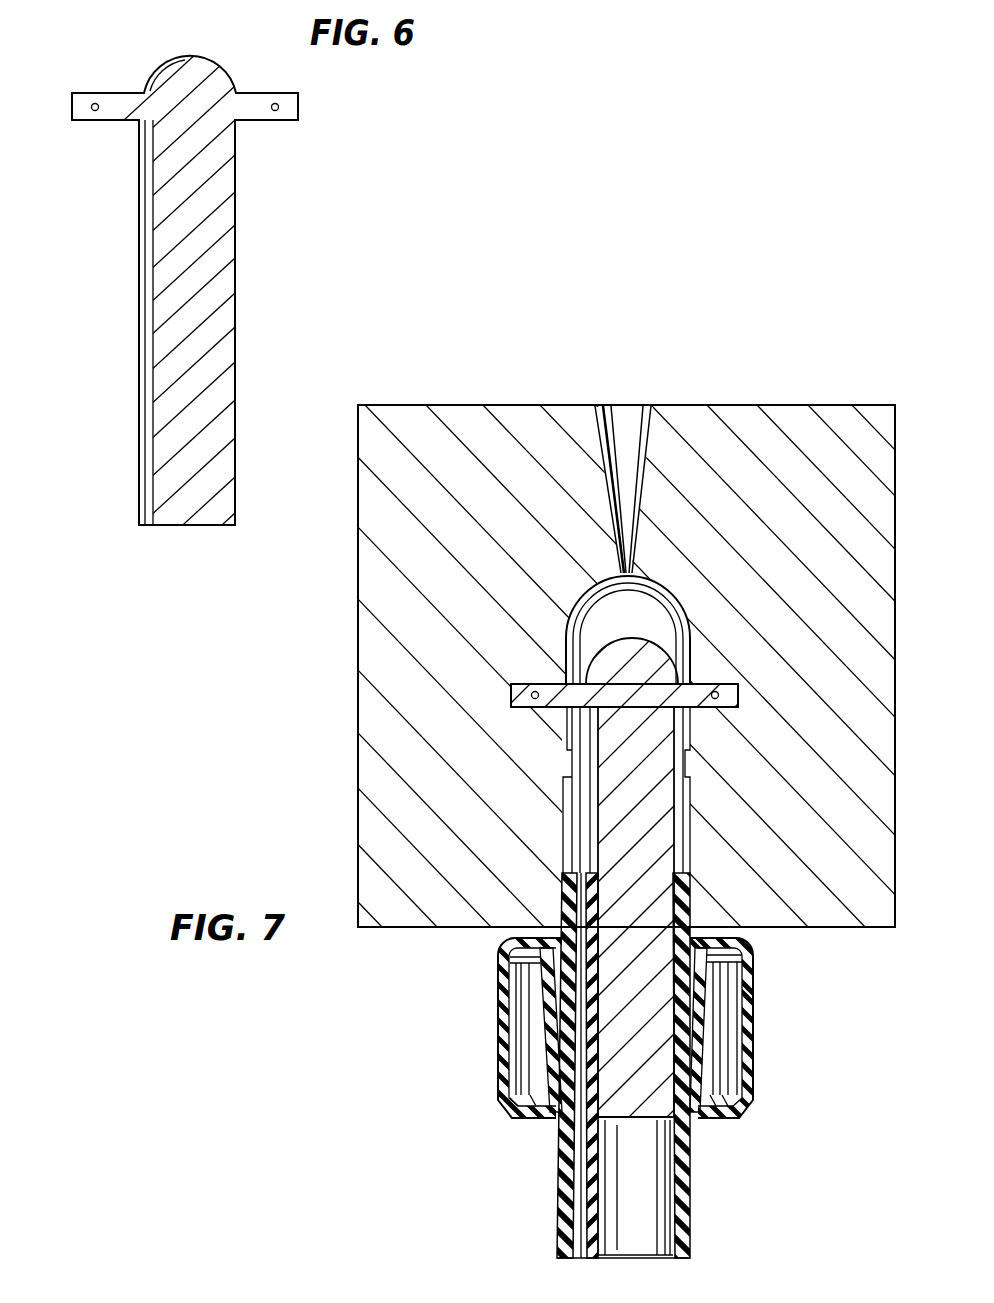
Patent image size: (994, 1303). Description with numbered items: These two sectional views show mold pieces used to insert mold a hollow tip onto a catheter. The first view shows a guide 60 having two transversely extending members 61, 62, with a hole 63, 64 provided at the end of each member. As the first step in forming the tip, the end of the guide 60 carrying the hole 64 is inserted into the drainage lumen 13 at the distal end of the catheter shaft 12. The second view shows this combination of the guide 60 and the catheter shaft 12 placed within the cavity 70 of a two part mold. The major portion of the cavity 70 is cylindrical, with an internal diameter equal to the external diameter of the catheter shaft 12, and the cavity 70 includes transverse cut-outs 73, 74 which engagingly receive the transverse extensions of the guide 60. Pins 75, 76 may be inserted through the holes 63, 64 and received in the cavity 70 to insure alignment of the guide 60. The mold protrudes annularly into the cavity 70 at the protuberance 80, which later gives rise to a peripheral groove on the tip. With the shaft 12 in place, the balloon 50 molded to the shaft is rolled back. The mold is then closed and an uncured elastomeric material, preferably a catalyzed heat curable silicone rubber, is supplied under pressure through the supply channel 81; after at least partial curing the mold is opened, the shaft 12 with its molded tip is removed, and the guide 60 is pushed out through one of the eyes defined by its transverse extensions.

In FIG. 7, the catheter shaft 12 is at (694, 1238).
In FIG. 7, the drainage lumen 13 is at (655, 1226).
In FIG. 7, the balloon 50 is at (498, 1052).
In FIG. 6, the guide 60 is at (237, 388).
In FIG. 7, the guide 60 is at (648, 1118).
In FIG. 6, the transversely extending member 61 is at (80, 93).
In FIG. 6, the transversely extending member 62 is at (296, 82).
In FIG. 6, the hole 63 is at (95, 112).
In FIG. 6, the hole 64 is at (283, 118).
In FIG. 7, the cavity 70 is at (640, 629).
In FIG. 7, the transverse cut-out 73 is at (525, 683).
In FIG. 7, the transverse cut-out 74 is at (731, 683).
In FIG. 7, the pin 75 is at (535, 699).
In FIG. 7, the pin 76 is at (714, 699).
In FIG. 7, the annular protuberance 80 is at (567, 767).
In FIG. 7, the supply channel 81 is at (604, 404).